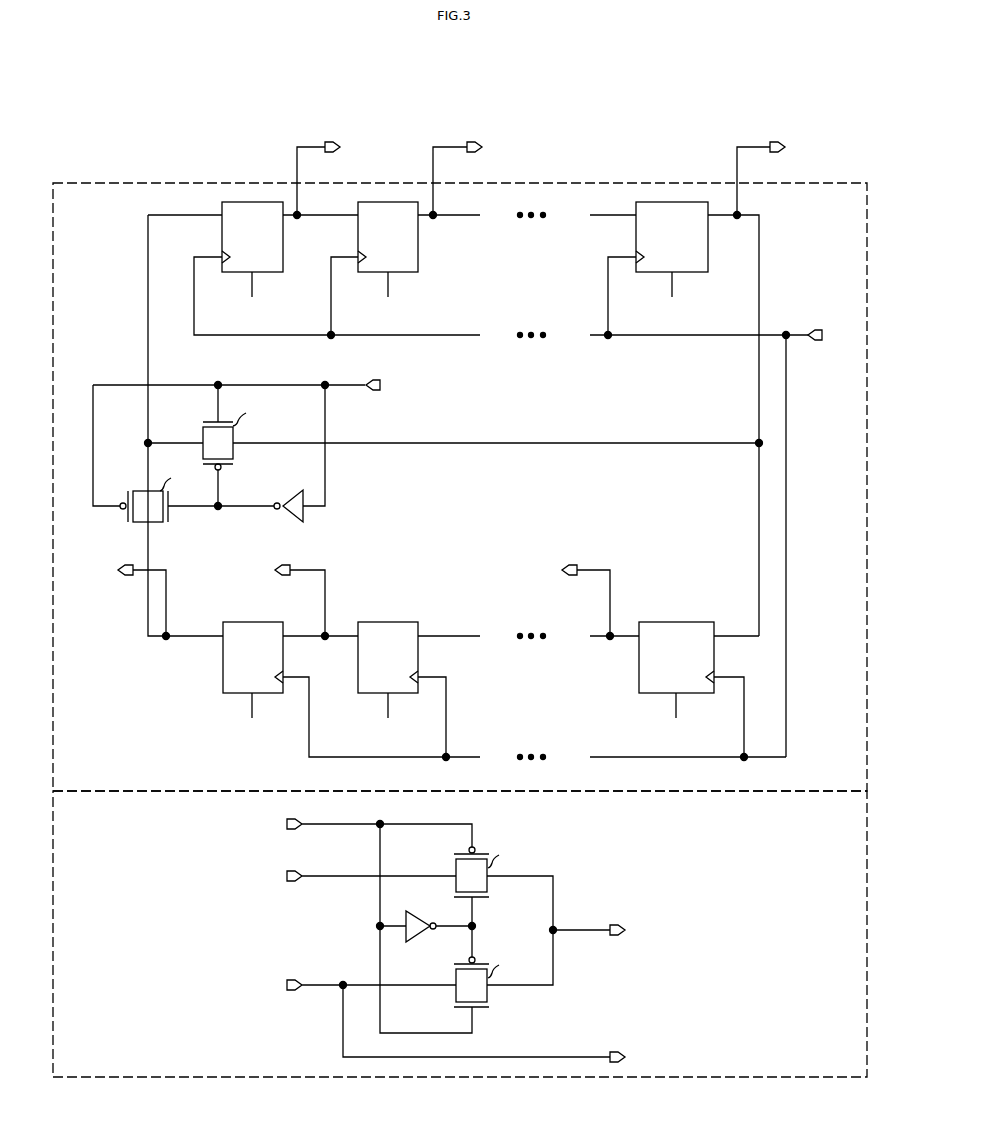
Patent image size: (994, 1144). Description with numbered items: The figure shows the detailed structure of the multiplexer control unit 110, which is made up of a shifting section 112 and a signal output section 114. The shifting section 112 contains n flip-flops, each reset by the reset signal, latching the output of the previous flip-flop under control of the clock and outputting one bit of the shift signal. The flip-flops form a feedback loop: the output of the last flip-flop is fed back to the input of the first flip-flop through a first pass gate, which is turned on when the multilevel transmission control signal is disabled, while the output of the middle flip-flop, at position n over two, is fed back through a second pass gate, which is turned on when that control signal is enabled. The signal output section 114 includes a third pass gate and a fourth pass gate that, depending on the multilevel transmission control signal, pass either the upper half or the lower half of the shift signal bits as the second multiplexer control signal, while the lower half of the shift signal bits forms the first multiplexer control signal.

The multiplexer control unit 110 is at (848, 70).
The shifting section 112 is at (867, 203).
The signal output section 114 is at (864, 855).